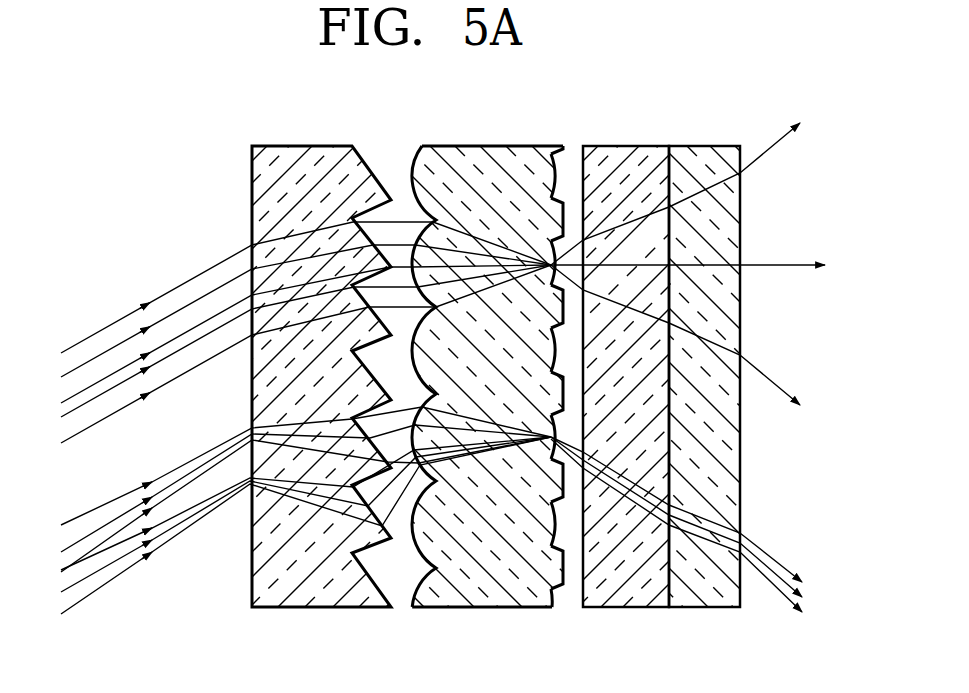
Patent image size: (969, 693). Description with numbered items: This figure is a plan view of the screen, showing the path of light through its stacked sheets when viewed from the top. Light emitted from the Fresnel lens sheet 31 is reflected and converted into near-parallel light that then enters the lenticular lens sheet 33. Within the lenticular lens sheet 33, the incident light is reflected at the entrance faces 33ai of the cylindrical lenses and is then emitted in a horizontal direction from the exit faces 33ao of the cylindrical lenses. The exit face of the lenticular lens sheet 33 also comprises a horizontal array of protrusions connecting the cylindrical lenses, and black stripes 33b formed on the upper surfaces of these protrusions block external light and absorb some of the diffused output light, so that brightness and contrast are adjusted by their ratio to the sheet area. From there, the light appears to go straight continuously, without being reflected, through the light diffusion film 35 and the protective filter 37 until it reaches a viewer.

The Fresnel lens sheet 31 is at (318, 608).
The lenticular lens sheet 33 is at (484, 375).
The entrance faces of the cylindrical lenses 33ai is at (412, 168).
The exit faces of the cylindrical lenses 33ao is at (553, 168).
The black stripes 33b is at (563, 210).
The light diffusion film 35 is at (615, 608).
The protective filter 37 is at (710, 608).